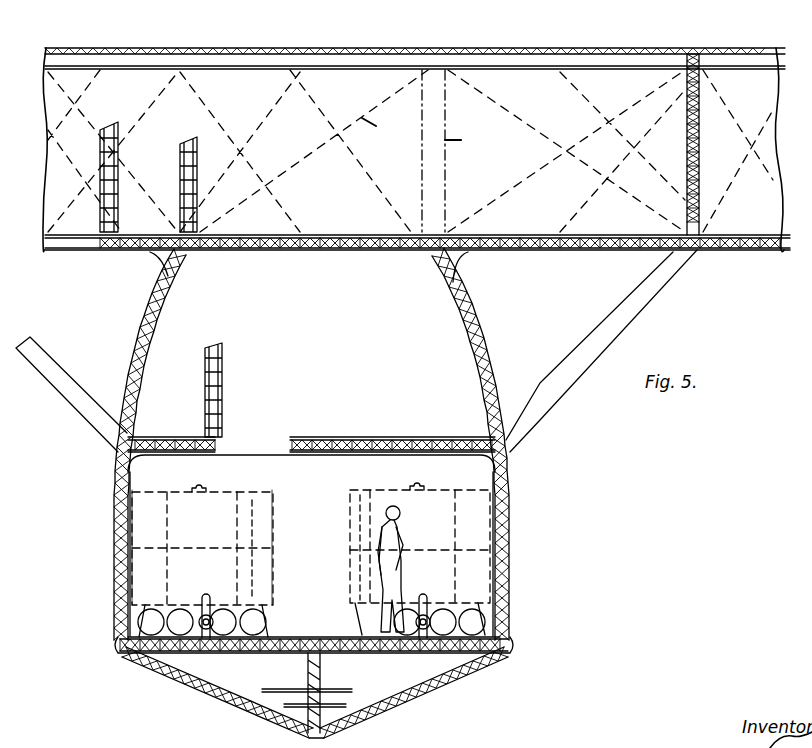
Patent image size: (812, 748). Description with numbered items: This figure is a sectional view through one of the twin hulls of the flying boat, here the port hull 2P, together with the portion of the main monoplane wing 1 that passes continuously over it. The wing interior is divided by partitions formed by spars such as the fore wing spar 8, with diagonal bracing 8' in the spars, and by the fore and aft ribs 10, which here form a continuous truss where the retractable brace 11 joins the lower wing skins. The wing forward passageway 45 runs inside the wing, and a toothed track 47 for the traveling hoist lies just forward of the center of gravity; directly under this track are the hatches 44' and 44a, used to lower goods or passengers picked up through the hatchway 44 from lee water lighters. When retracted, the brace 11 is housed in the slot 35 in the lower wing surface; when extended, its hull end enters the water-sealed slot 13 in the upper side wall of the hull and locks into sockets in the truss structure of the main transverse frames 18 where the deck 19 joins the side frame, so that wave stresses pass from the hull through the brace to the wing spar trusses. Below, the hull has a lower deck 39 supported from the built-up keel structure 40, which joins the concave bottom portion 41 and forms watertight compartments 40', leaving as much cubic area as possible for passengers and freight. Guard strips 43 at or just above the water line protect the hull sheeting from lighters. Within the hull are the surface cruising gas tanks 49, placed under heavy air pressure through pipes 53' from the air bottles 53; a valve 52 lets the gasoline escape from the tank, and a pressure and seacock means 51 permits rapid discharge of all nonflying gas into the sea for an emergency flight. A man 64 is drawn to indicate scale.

The main monoplane wing 1 is at (275, 49).
The wing forward passageway 45 is at (445, 82).
The toothed track 47 is at (410, 151).
The fore wing spar 8 is at (460, 140).
The diagonal bracing 8' is at (378, 127).
The fore and aft ribs 10 is at (700, 148).
The retractable brace 11 is at (576, 231).
The slot in lower wing surface 35 is at (513, 254).
The hatch 44' is at (417, 226).
The hatchway 44 is at (417, 264).
The hatch 44a is at (262, 437).
The deck 19 is at (370, 437).
The main transverse frames 18 is at (127, 361).
The slot 13 is at (487, 346).
The port hull 2P is at (512, 490).
The air bottles 53 is at (318, 568).
The pipes 53' is at (306, 541).
The surface cruising gas tanks 49 is at (403, 500).
The man 64 is at (378, 559).
The valve 52 is at (212, 606).
The lower deck 39 is at (292, 638).
The guard strips 43 is at (513, 650).
The keel structure 40 is at (334, 693).
The watertight compartments 40' is at (255, 694).
The concave bottom portion 41 is at (433, 680).
The pressure and seacock means 51 is at (216, 658).